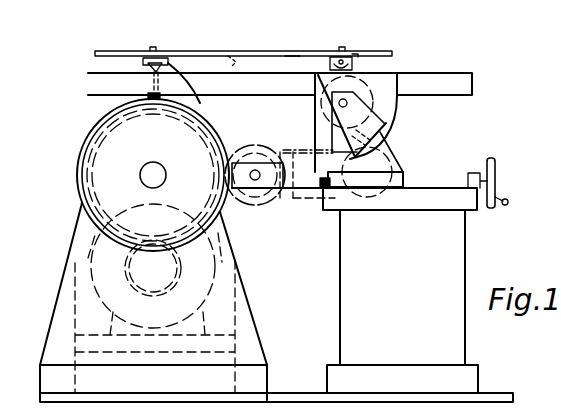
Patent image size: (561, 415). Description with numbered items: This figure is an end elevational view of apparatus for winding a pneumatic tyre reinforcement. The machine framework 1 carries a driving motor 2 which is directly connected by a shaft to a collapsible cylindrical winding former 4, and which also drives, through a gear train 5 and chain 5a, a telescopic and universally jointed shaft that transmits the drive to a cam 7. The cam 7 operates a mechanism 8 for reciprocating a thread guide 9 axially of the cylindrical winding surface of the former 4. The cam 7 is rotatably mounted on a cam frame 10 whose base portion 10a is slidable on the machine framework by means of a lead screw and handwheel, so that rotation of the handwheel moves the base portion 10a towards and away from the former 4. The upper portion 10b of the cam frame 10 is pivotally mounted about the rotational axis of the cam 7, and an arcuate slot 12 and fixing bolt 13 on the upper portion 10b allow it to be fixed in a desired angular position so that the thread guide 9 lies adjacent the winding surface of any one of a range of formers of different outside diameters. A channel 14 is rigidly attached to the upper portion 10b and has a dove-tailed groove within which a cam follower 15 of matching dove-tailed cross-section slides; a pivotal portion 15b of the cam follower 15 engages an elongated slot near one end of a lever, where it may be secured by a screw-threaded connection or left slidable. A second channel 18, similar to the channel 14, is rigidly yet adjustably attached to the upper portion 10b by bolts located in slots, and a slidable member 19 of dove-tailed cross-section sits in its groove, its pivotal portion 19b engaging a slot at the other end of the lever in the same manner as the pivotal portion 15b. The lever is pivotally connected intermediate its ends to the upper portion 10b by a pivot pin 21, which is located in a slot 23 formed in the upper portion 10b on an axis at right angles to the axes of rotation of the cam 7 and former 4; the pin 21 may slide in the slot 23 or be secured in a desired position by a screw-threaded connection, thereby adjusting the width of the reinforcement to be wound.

The machine framework 1 is at (252, 340).
The driving motor 2 is at (88, 262).
The collapsible cylindrical winding former 4 is at (73, 153).
The gear train 5 is at (248, 140).
The chain 5a is at (310, 192).
The cam 7 is at (398, 92).
The mechanism for reciprocating the thread guide 8 is at (251, 51).
The thread guide 9 is at (148, 96).
The cam frame 10 is at (392, 147).
The base portion of the cam frame 10a is at (395, 163).
The upper portion of the cam frame 10b is at (457, 73).
The arcuate slot 12 is at (339, 116).
The fixing bolt 13 is at (352, 140).
The channel 14 is at (356, 56).
The cam follower 15 is at (355, 67).
The pivotal portion of the cam follower 15b is at (341, 50).
The channel 18 is at (195, 90).
The slidable member 19 is at (143, 63).
The pivotal portion of the slidable member 19b is at (150, 49).
The pivot pin 21 is at (289, 50).
The slot 23 is at (233, 63).